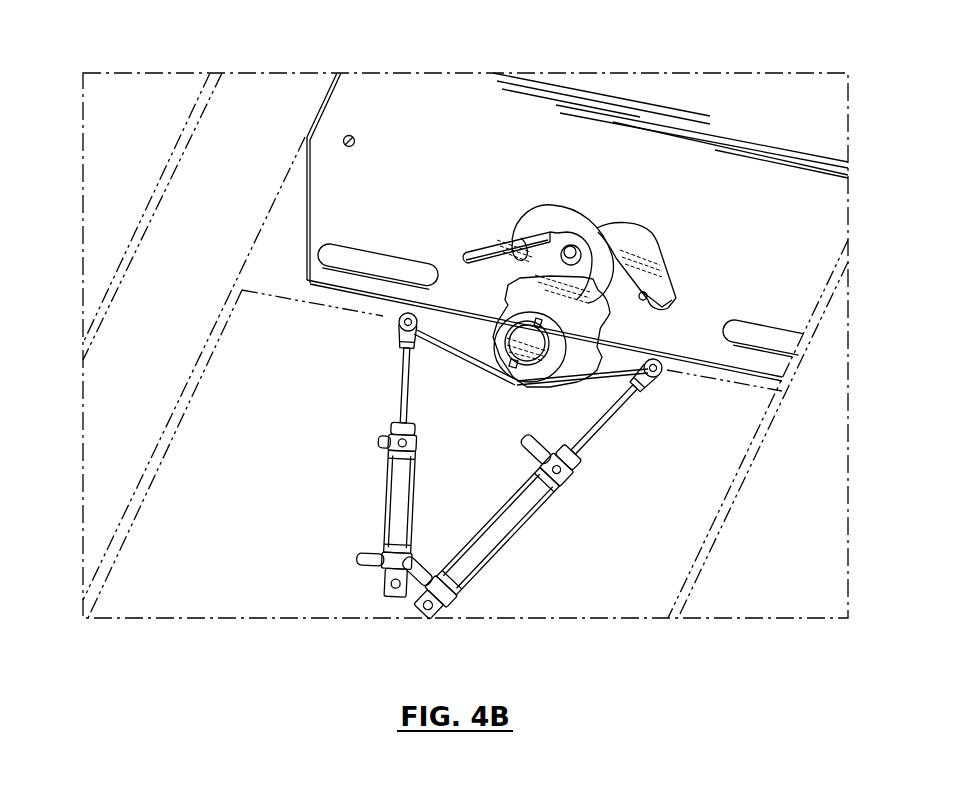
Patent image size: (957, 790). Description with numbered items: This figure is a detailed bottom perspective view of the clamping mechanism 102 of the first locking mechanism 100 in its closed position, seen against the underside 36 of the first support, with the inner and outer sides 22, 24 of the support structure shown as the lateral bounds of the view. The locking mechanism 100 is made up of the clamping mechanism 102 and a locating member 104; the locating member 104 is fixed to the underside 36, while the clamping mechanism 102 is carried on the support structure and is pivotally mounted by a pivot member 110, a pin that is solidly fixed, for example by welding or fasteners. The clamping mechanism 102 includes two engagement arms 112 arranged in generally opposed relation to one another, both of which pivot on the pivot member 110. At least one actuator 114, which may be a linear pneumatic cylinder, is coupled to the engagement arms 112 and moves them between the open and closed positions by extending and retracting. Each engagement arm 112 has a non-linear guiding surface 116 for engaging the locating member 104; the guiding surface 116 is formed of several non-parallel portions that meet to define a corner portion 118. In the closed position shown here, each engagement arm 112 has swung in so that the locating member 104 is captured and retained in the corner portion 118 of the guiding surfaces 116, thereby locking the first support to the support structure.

The inner side 22 is at (186, 208).
The outer side 24 is at (787, 472).
The underside 36 is at (406, 163).
The locking mechanism 100 is at (527, 152).
The clamping mechanism 102 is at (516, 344).
The locating member 104 is at (598, 235).
The pivot member 110 is at (510, 368).
The engagement arm 112 is at (563, 217).
The actuator 114 is at (395, 518).
The guiding surface 116 is at (513, 250).
The corner portion 118 is at (588, 261).